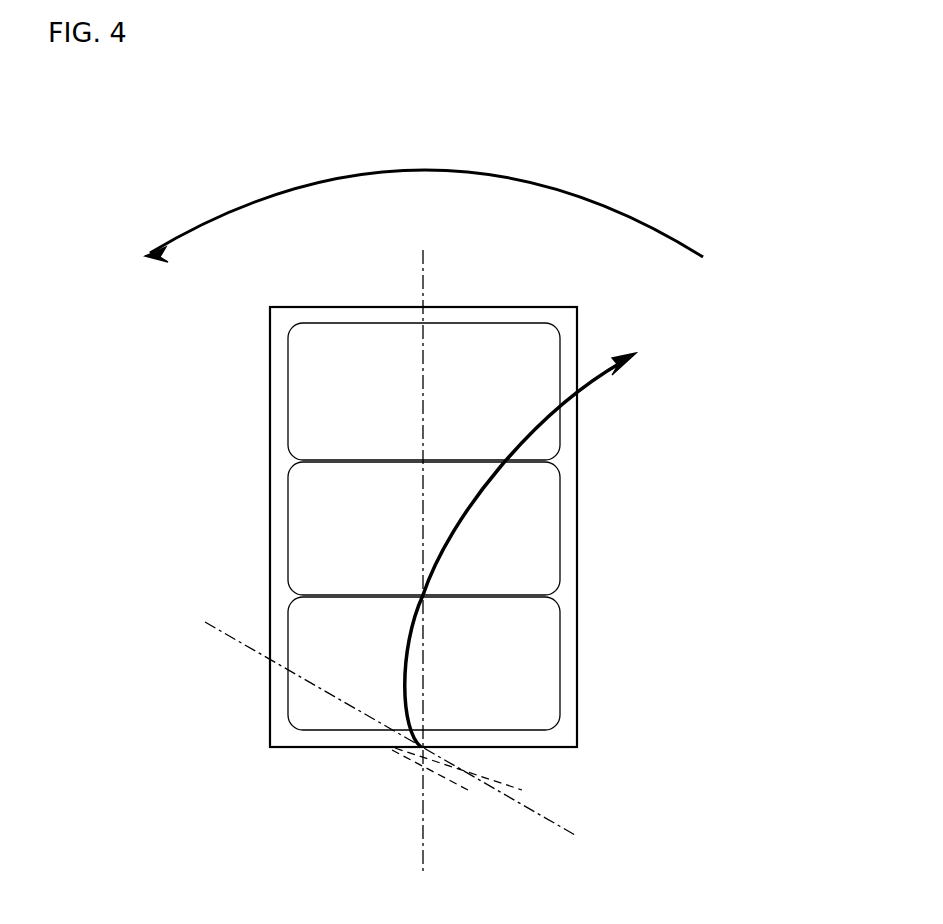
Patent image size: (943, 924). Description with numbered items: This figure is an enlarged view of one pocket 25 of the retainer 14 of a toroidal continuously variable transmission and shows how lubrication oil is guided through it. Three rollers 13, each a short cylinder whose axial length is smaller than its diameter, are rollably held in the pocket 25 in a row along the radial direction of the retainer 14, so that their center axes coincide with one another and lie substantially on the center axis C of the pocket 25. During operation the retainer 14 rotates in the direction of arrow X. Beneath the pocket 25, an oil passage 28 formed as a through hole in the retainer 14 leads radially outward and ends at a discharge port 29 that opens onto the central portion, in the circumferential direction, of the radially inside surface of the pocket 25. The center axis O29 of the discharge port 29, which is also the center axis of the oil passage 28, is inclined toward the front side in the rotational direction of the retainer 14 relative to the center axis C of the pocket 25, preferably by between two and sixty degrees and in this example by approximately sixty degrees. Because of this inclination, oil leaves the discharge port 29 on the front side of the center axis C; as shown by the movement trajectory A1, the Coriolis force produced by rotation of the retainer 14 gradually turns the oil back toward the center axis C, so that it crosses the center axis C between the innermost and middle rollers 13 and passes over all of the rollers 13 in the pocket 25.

The roller 13 is at (305, 393).
The retainer 14 is at (376, 527).
The pocket 25 is at (566, 533).
The oil passage 28 is at (472, 778).
The discharge port 29 is at (395, 750).
The center axis of the discharge port O29 is at (238, 643).
The center axis of the pocket C is at (444, 280).
The rotational direction of the retainer X is at (553, 188).
The movement trajectory of the lubrication oil A1 is at (588, 388).